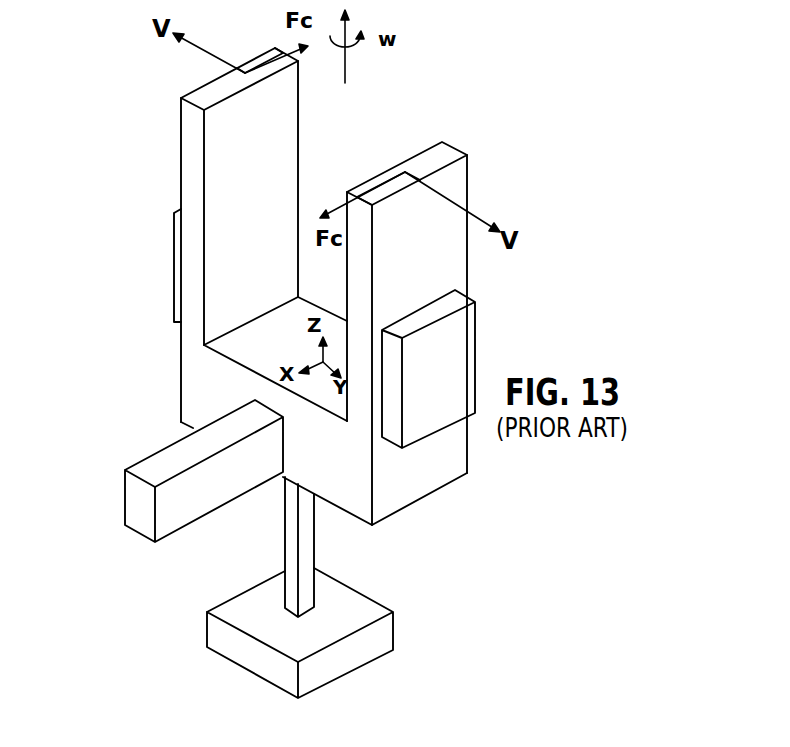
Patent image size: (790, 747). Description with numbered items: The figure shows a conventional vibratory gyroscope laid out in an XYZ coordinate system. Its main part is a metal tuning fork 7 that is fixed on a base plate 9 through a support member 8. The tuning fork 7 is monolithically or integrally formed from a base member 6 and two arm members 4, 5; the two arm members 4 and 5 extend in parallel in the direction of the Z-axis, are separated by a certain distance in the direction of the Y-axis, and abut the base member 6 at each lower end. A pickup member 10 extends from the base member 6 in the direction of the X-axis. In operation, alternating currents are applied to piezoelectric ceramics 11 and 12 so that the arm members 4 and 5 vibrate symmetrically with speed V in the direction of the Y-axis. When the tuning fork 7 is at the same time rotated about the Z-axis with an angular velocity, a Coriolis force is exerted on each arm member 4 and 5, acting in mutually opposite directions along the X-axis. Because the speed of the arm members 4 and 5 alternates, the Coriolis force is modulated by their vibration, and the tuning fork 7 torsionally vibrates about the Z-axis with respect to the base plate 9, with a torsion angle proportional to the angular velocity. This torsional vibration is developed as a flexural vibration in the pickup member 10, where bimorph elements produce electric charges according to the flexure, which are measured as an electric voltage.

The arm member 4 is at (428, 265).
The arm member 5 is at (195, 157).
The base member 6 is at (200, 385).
The tuning fork 7 is at (296, 115).
The support member 8 is at (292, 548).
The base plate 9 is at (378, 635).
The pickup member 10 is at (147, 512).
The piezoelectric ceramic 11 is at (440, 347).
The piezoelectric ceramic 12 is at (175, 290).